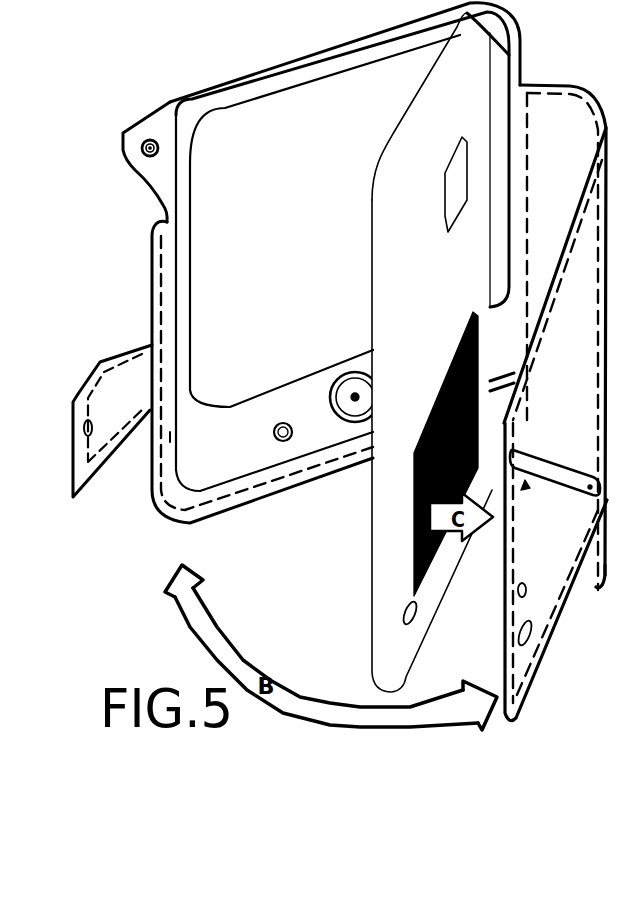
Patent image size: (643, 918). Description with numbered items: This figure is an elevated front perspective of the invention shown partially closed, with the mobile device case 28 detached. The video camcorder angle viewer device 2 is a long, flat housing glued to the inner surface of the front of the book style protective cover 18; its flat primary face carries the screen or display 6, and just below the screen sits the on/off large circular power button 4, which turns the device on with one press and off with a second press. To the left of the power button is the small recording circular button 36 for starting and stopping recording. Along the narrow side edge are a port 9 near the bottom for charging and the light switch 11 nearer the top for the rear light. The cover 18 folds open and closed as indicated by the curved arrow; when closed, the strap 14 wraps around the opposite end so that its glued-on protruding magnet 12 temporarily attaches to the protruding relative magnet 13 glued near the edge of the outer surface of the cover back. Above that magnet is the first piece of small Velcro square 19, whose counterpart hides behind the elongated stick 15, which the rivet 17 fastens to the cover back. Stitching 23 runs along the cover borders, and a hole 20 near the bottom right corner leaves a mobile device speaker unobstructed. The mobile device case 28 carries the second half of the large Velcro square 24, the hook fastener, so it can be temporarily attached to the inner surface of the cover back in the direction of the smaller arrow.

The video camcorder angle viewer device 2 is at (193, 98).
The screen or display 6 is at (290, 118).
The light switch 11 is at (149, 153).
The strap 14 is at (124, 352).
The protruding magnet 12 is at (93, 431).
The port 9 is at (168, 437).
The small recording circular button 36 is at (285, 442).
The on/off large circular power button 4 is at (355, 412).
The second half of the large Velcro square 24 is at (440, 385).
The mobile device case 28 is at (388, 572).
The stitching 23 is at (597, 390).
The first piece of small Velcro square 19 is at (525, 487).
The elongated stick 15 is at (563, 482).
The protruding relative magnet 13 is at (527, 590).
The rivet 17 is at (597, 587).
The book style protective cover 18 is at (513, 657).
The hole 20 is at (533, 630).